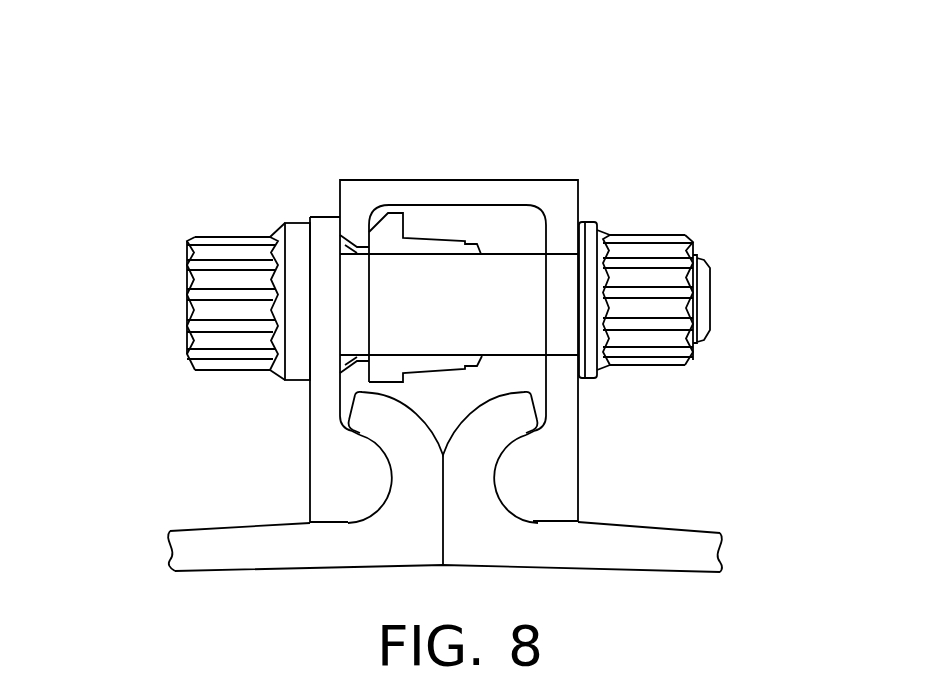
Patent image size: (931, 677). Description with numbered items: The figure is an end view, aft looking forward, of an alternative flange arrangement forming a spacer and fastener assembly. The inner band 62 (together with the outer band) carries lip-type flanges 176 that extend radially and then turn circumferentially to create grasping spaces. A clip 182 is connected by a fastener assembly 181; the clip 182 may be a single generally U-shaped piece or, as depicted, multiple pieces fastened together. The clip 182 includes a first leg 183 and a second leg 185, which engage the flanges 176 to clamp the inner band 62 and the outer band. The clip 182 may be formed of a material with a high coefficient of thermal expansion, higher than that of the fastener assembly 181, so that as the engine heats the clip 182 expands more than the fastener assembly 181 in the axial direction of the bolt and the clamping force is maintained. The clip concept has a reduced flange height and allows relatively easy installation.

The fastener assembly 181 is at (160, 272).
The clip 182 is at (530, 160).
The first leg 183 is at (563, 405).
The second leg 185 is at (325, 237).
The lip-type flanges 176 is at (340, 478).
The inner band 62 is at (215, 505).